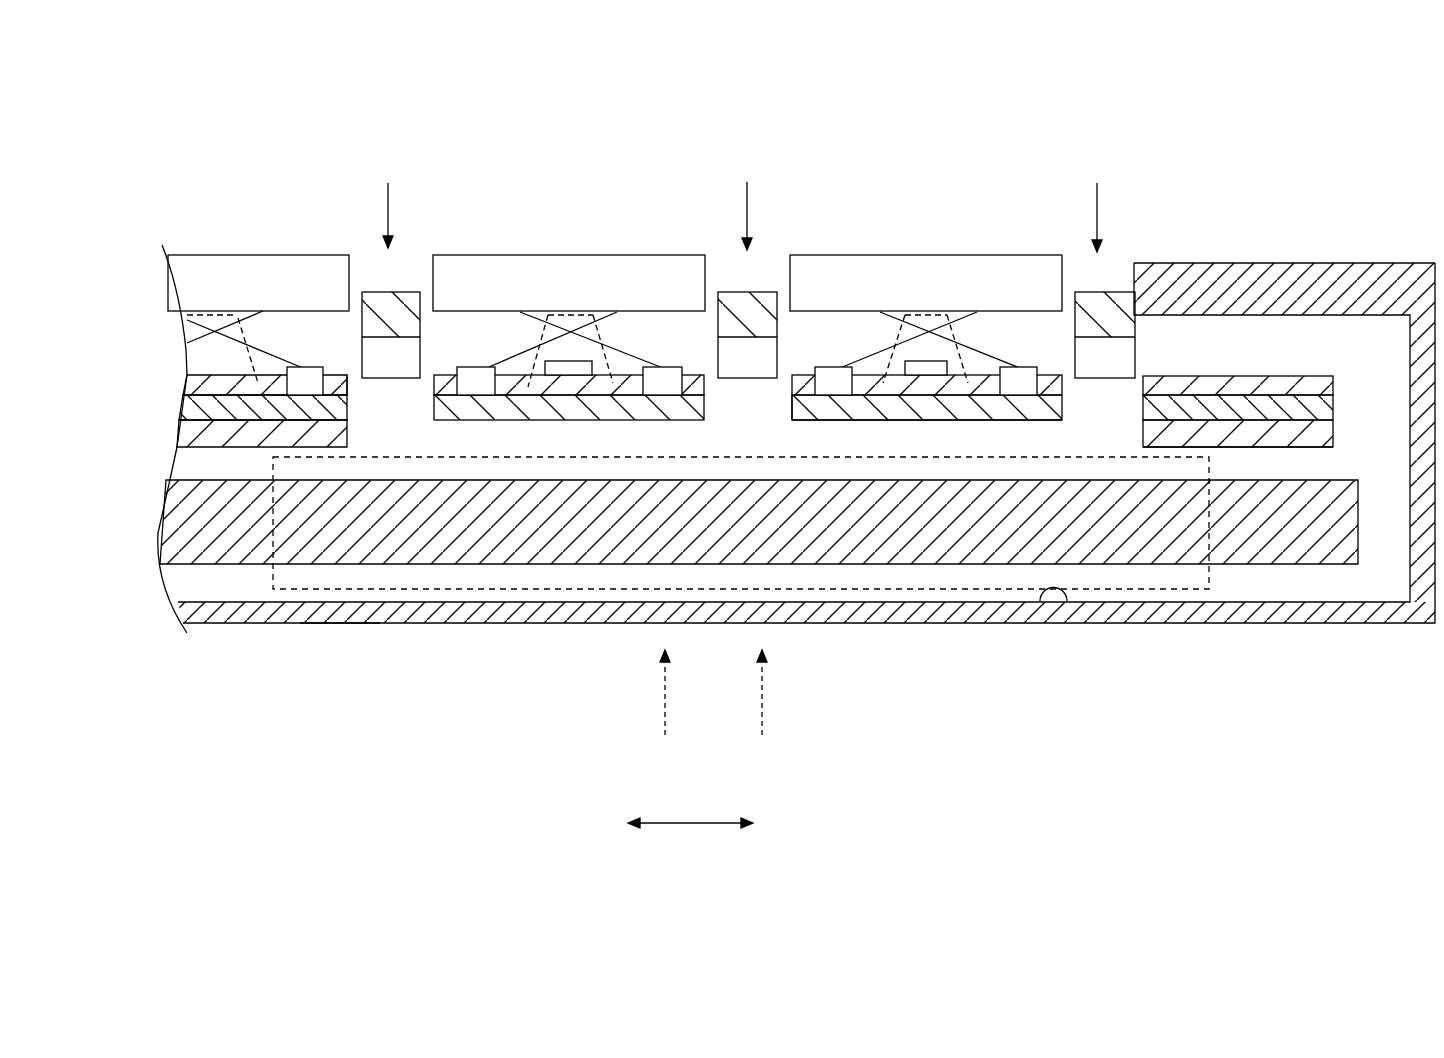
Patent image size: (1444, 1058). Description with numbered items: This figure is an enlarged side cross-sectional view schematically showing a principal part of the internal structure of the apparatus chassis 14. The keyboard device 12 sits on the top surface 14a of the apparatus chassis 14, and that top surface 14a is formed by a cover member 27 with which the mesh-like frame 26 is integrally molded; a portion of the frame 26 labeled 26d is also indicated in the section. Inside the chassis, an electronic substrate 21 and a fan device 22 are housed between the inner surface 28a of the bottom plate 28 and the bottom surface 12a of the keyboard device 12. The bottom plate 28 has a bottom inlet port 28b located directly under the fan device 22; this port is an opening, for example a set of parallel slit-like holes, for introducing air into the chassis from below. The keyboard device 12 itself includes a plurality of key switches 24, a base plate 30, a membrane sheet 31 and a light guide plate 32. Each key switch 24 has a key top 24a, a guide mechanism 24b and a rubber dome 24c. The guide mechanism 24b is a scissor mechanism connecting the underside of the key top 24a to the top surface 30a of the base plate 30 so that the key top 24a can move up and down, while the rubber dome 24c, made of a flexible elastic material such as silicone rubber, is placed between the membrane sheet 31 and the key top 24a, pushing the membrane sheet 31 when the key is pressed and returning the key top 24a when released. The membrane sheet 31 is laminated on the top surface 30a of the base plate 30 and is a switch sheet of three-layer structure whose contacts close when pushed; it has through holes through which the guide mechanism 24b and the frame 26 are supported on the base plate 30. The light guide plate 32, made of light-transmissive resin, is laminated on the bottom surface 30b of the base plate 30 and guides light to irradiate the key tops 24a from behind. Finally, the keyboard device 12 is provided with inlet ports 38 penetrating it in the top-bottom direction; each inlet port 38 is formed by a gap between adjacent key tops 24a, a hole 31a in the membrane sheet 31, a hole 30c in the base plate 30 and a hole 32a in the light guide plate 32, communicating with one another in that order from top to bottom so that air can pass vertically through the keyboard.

The keyboard device 12 is at (154, 204).
The bottom surface of the keyboard device 12a is at (1257, 448).
The apparatus chassis 14 is at (207, 74).
The top surface of the apparatus chassis 14a is at (1362, 263).
The electronic substrate 21 is at (855, 550).
The fan device 22 is at (547, 607).
The key switch 24 is at (615, 237).
The key top 24a is at (233, 255).
The guide mechanism 24b is at (508, 358).
The rubber dome 24c is at (602, 337).
The frame 26 is at (367, 325).
The connector terminal 26d is at (403, 340).
The cover member 27 is at (1287, 275).
The bottom plate 28 is at (1335, 623).
The inner surface of the bottom plate 28a is at (1067, 622).
The bottom inlet port 28b is at (342, 623).
The base plate 30 is at (190, 410).
The top surface of the base plate 30a is at (1202, 395).
The bottom surface of the base plate 30b is at (920, 420).
The hole formed in the base plate 30c is at (792, 407).
The membrane sheet 31 is at (187, 387).
The hole formed in the membrane sheet 31a is at (350, 383).
The light guide plate 32 is at (182, 437).
The hole formed in the light guide plate 32a is at (1143, 432).
The inlet port 38 is at (737, 251).